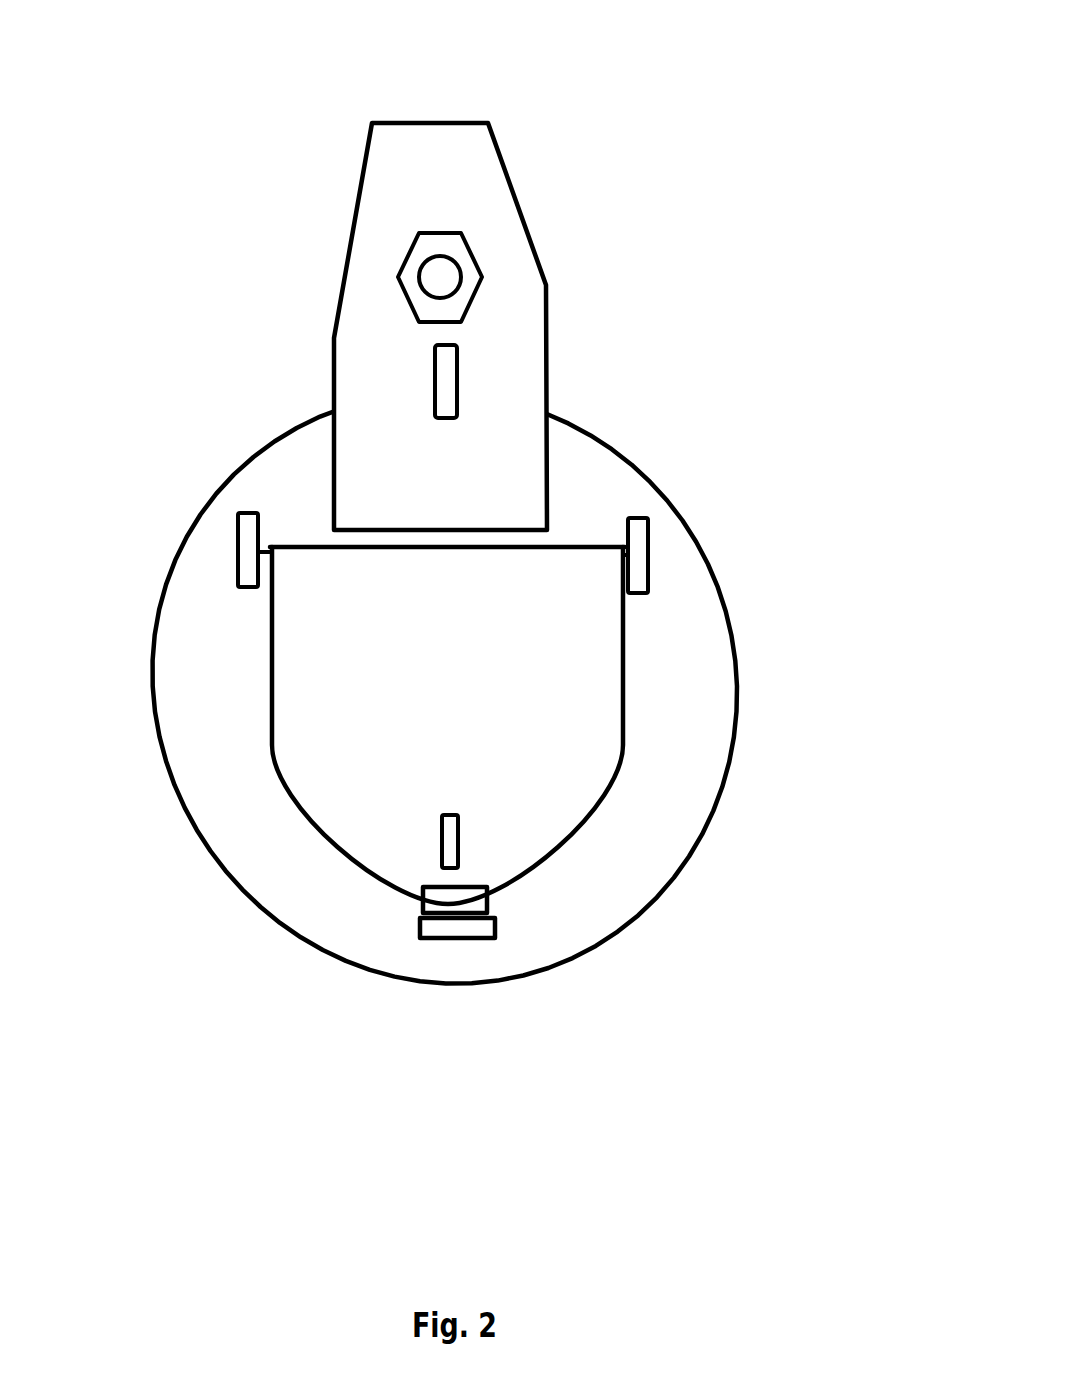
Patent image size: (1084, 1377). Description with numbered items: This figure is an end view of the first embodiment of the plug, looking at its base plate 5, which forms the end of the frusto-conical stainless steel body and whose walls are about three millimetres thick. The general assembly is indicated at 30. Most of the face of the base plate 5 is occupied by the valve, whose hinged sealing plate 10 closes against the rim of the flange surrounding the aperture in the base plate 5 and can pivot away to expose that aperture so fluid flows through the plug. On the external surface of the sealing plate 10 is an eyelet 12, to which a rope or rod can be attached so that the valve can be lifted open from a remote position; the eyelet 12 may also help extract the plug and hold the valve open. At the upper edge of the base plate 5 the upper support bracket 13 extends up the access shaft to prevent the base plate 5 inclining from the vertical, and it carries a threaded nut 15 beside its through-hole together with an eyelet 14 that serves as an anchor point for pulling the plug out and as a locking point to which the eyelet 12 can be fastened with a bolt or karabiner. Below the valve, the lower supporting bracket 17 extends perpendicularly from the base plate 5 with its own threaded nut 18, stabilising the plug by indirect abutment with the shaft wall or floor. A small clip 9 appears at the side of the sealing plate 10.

The fluid dispensing assembly 30 is at (775, 202).
The base plate 5 is at (672, 638).
The upper support bracket 13 is at (473, 172).
The threaded nut 15 is at (455, 263).
The eyelet 14 is at (455, 370).
The sealing plate 10 is at (543, 792).
The retaining clip 9 is at (640, 527).
The eyelet 12 is at (440, 842).
The threaded nut 18 is at (470, 895).
The lower supporting bracket 17 is at (437, 927).